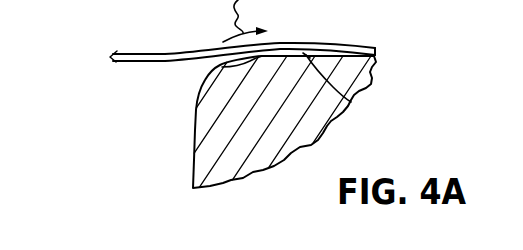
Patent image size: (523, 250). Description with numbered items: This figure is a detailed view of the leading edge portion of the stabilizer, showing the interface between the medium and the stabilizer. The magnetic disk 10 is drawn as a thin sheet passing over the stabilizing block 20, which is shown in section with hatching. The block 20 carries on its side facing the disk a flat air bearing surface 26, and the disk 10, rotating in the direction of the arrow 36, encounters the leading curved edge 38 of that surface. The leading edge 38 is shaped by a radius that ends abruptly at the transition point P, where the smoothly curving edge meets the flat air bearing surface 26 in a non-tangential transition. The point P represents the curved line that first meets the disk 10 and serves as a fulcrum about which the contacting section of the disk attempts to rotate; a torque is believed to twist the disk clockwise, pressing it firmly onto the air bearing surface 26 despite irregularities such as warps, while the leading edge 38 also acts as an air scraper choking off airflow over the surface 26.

The magnetic disk 10 is at (153, 53).
The stabilizing block 20 is at (200, 148).
The flat air bearing surface 26 is at (352, 102).
The arrow 36 is at (100, 86).
The leading curved edge 38 is at (203, 82).
The transition point P is at (222, 67).